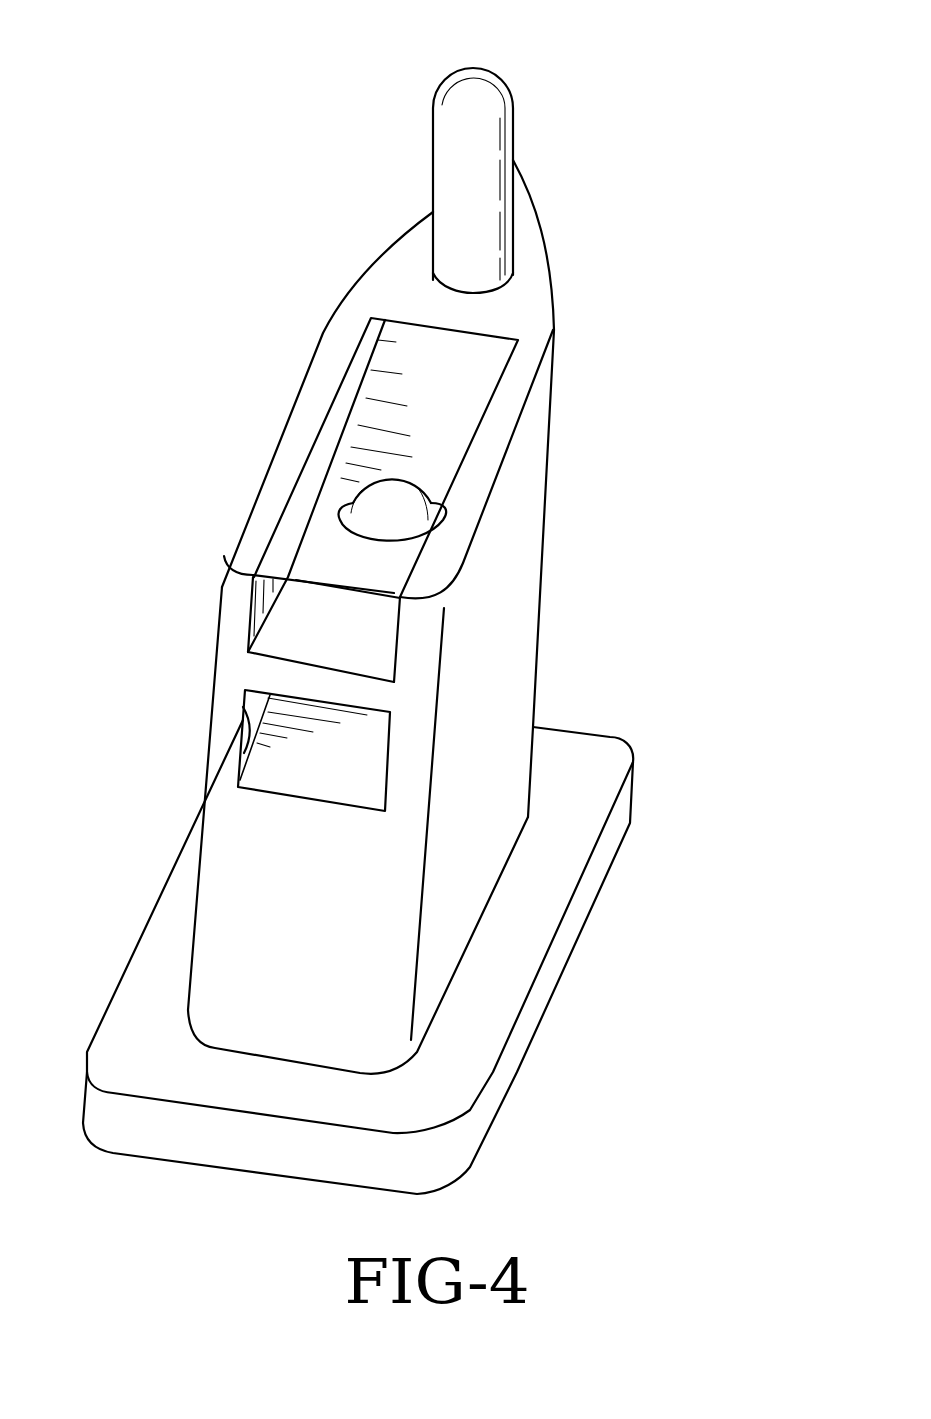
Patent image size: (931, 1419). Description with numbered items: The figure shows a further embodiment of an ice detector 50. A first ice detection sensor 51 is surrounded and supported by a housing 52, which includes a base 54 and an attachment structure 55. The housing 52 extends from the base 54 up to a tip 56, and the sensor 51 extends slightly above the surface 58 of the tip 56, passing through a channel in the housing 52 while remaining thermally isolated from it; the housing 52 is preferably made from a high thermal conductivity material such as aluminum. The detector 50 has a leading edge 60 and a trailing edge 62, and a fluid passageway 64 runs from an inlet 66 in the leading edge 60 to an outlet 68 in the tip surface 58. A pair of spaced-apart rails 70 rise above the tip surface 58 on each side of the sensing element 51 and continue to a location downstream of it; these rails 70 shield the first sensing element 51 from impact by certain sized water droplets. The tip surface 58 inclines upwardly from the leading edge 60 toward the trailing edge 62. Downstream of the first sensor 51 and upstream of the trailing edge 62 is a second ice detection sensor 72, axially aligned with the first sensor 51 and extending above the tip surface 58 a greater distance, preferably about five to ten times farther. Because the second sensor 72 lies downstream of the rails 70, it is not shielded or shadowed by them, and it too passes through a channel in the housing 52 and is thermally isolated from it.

The detector 50 is at (683, 172).
The first ice detection sensor 51 is at (368, 516).
The housing 52 is at (235, 858).
The base 54 is at (388, 1038).
The attachment structure 55 is at (223, 1080).
The tip 56 is at (312, 376).
The tip surface 58 is at (482, 367).
The leading edge 60 is at (215, 948).
The trailing edge 62 is at (533, 187).
The fluid passageway 64 is at (321, 767).
The inlet 66 is at (247, 732).
The outlet 68 is at (378, 592).
The rails 70 is at (275, 483).
The second ice detection sensor 72 is at (461, 107).